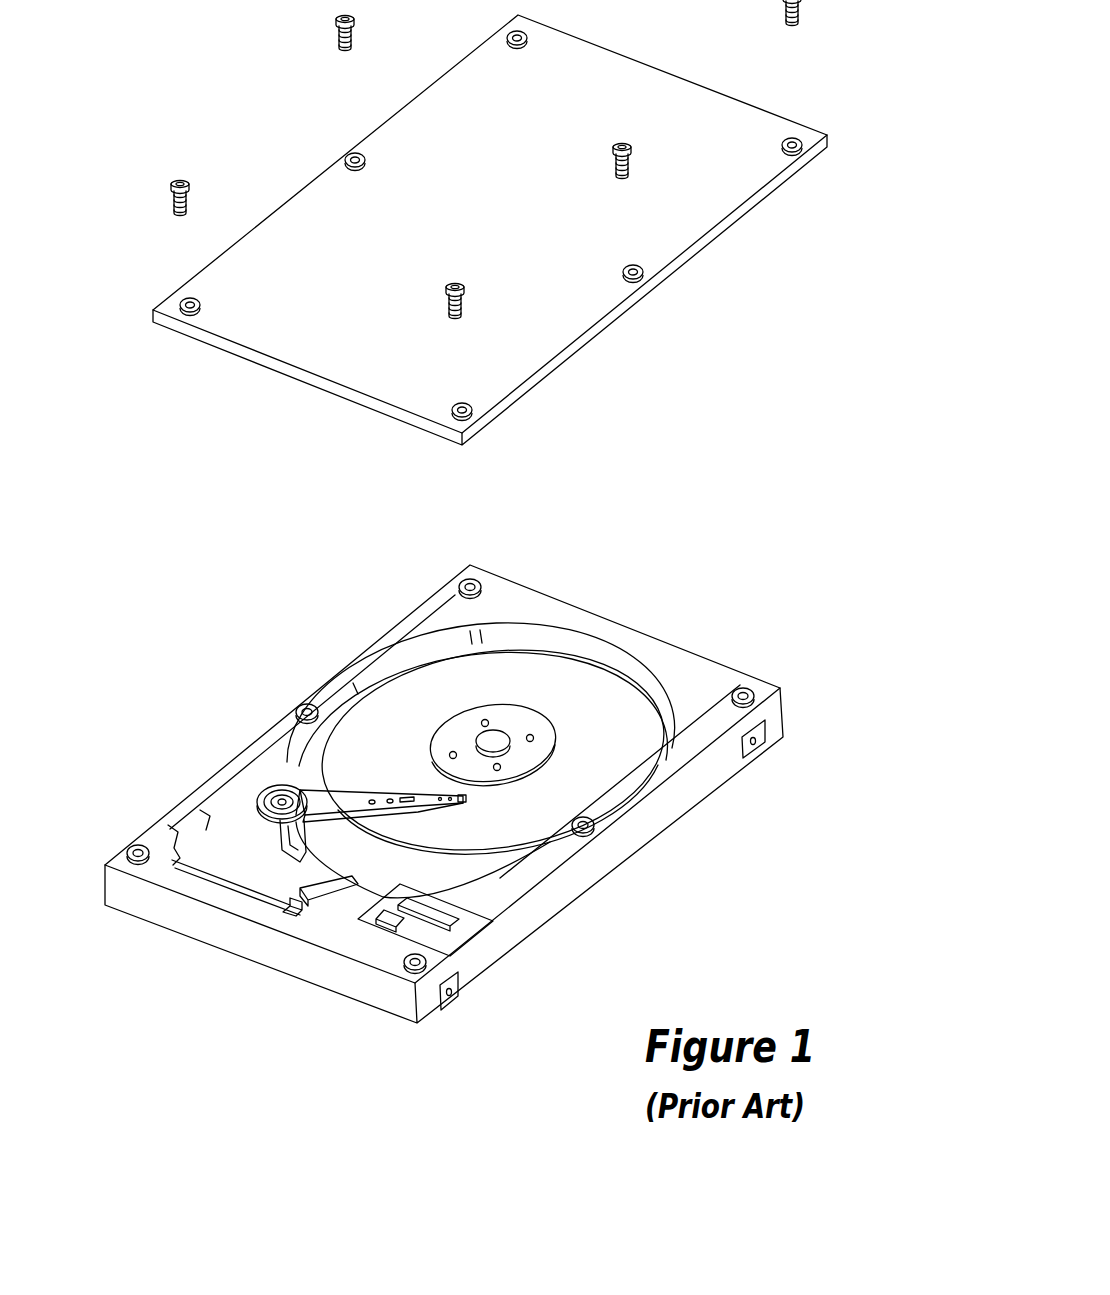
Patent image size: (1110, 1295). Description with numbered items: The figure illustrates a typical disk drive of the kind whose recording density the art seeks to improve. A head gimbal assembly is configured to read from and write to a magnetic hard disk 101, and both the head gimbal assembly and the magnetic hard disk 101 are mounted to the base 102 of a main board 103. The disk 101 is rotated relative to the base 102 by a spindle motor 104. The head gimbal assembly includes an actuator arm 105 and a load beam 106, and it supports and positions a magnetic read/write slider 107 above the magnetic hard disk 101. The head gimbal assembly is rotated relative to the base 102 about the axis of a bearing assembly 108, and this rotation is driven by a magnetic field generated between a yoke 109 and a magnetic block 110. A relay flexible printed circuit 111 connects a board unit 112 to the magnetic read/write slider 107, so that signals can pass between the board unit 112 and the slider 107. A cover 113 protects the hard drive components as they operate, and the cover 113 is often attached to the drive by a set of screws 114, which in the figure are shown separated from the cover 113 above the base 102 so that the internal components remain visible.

The magnetic hard disk 101 is at (522, 668).
The base 102 is at (437, 626).
The main board 103 is at (705, 652).
The spindle motor 104 is at (497, 737).
The actuator arm 105 is at (282, 796).
The load beam 106 is at (432, 802).
The magnetic read/write slider 107 is at (466, 806).
The bearing assembly 108 is at (348, 802).
The yoke 109 is at (245, 822).
The magnetic block 110 is at (285, 913).
The relay flexible printed circuit 111 is at (370, 903).
The board unit 112 is at (415, 927).
The cover 113 is at (398, 140).
The screws 114 is at (336, 38).